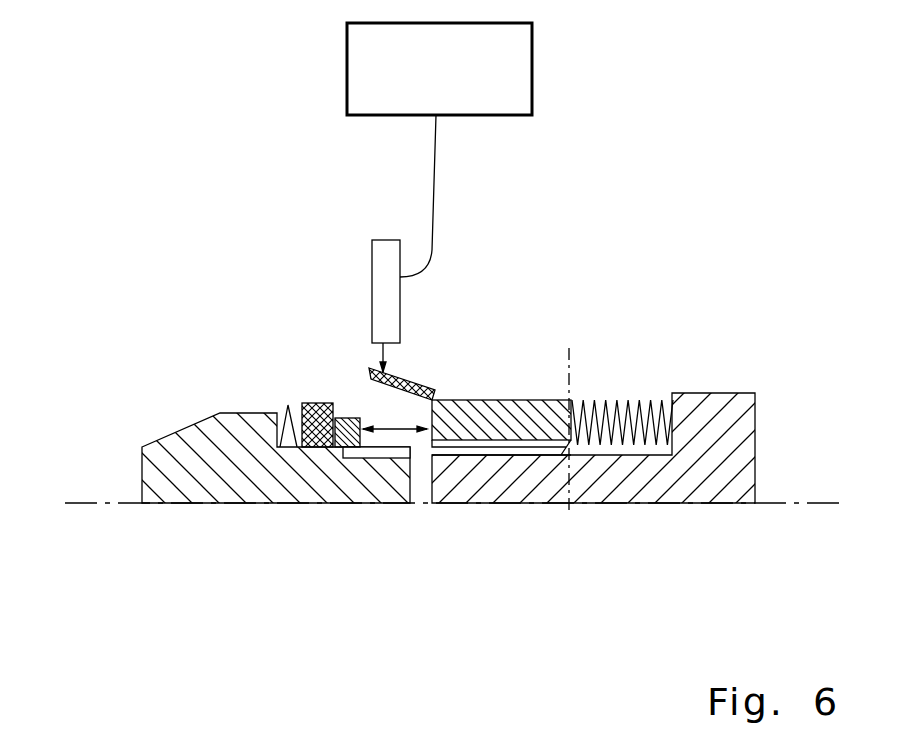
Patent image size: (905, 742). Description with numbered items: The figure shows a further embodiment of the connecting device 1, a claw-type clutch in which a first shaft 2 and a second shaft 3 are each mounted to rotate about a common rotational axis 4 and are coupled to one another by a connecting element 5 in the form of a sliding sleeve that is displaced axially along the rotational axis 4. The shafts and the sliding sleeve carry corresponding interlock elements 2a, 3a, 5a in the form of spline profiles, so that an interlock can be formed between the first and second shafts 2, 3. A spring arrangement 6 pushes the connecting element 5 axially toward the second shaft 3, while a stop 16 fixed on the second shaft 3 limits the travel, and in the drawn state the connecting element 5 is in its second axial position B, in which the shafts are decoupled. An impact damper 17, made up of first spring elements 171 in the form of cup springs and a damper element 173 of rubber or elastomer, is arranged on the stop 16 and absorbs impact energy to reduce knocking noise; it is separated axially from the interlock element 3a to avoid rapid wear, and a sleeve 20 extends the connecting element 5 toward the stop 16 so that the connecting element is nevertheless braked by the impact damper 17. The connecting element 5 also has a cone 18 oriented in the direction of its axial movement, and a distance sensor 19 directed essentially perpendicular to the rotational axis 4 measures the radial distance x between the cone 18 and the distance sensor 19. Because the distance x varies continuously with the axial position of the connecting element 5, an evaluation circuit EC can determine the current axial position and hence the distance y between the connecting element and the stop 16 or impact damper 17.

The connecting device 1 is at (222, 543).
The first shaft 2 is at (705, 415).
The interlock element of first shaft 2a is at (563, 457).
The second shaft 3 is at (180, 452).
The interlock element of second shaft 3a is at (377, 458).
The rotational axis 4 is at (102, 502).
The connecting element 5 is at (517, 398).
The interlock element of connecting element 5a is at (477, 450).
The spring arrangement 6 is at (632, 388).
The stop 16 is at (193, 405).
The impact damper 17 is at (258, 390).
The cone 18 is at (437, 373).
The distance sensor 19 is at (386, 240).
The sleeve 20 is at (342, 448).
The first spring elements 171 is at (287, 403).
The damper element 173 is at (316, 403).
The evaluation circuit EC is at (532, 62).
The second axial position B is at (569, 413).
The radial distance x is at (388, 357).
The distance between connecting element and stop y is at (418, 437).